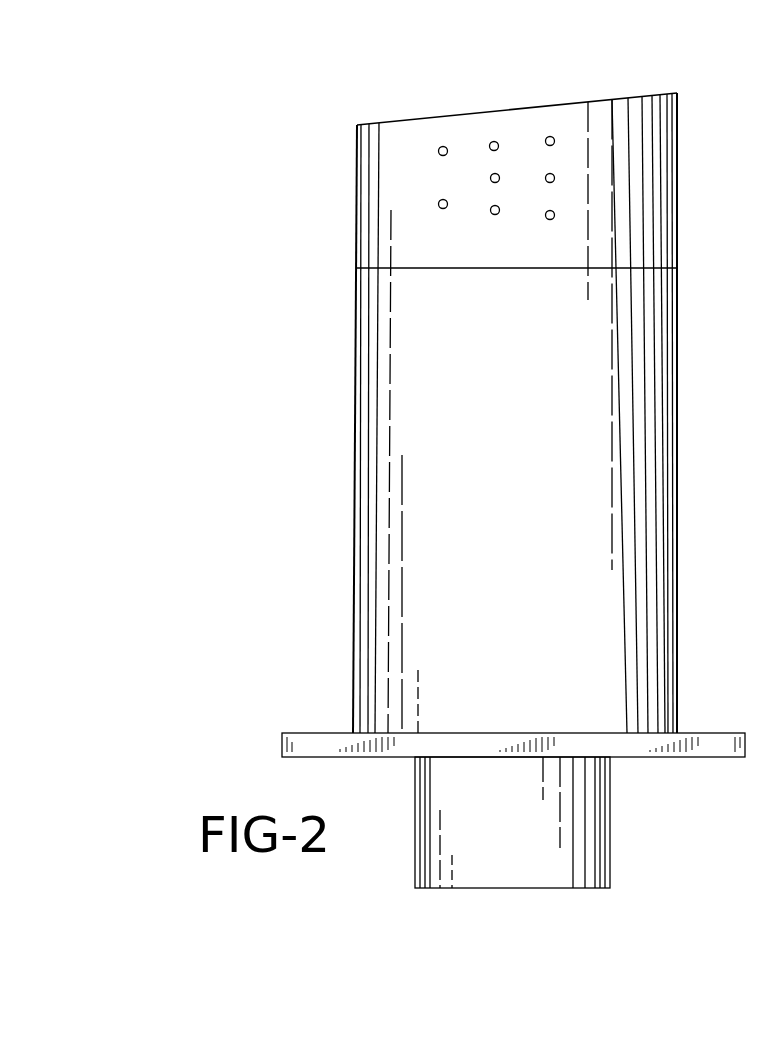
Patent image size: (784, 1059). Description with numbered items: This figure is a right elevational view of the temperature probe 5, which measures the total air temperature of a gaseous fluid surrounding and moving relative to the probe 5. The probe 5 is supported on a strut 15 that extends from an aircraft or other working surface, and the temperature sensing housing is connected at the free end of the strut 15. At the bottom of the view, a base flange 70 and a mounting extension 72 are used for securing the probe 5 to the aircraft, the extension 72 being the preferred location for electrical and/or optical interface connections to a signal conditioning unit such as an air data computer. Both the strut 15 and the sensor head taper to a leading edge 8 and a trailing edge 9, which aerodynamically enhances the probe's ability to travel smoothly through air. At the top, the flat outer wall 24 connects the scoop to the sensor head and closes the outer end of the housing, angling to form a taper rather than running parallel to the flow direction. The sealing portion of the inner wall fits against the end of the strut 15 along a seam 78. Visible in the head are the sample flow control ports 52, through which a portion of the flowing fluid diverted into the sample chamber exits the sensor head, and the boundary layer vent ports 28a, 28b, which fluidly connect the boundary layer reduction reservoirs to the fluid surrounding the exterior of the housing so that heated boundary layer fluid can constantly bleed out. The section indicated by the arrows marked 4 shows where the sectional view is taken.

The temperature probe 5 is at (249, 304).
The leading edge 8 is at (678, 505).
The trailing edge 9 is at (355, 505).
The strut 15 is at (352, 556).
The outer side wall 24 is at (418, 118).
The boundary layer vent ports 28a is at (444, 146).
The boundary layer vent ports 28b is at (552, 136).
The sample flow control ports 52 is at (495, 141).
The base flange 70 is at (700, 733).
The mounting extension 72 is at (595, 823).
The seam 78 is at (654, 268).
The section line 4- 4 is at (515, 179).